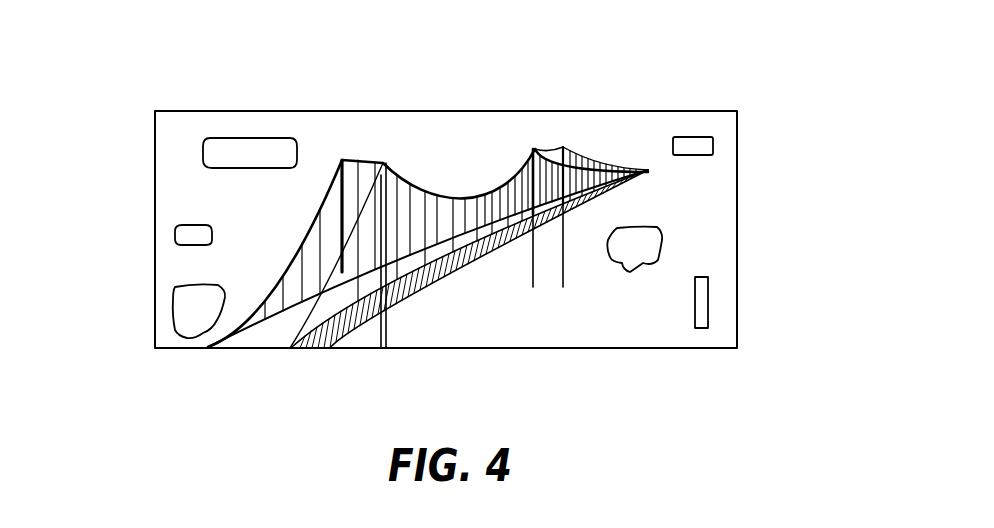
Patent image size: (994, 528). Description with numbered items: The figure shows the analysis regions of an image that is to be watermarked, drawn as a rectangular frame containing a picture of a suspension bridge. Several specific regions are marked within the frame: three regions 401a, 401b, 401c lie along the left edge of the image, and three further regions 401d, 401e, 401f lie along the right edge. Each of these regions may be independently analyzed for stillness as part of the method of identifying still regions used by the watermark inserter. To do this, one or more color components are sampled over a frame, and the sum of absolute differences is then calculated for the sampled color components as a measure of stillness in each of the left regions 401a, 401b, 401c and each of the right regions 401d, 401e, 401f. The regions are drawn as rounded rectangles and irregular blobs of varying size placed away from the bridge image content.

The analysis region 401a is at (218, 139).
The analysis region 401b is at (176, 231).
The analysis region 401c is at (182, 310).
The analysis region 401d is at (713, 136).
The analysis region 401e is at (653, 242).
The analysis region 401f is at (705, 311).